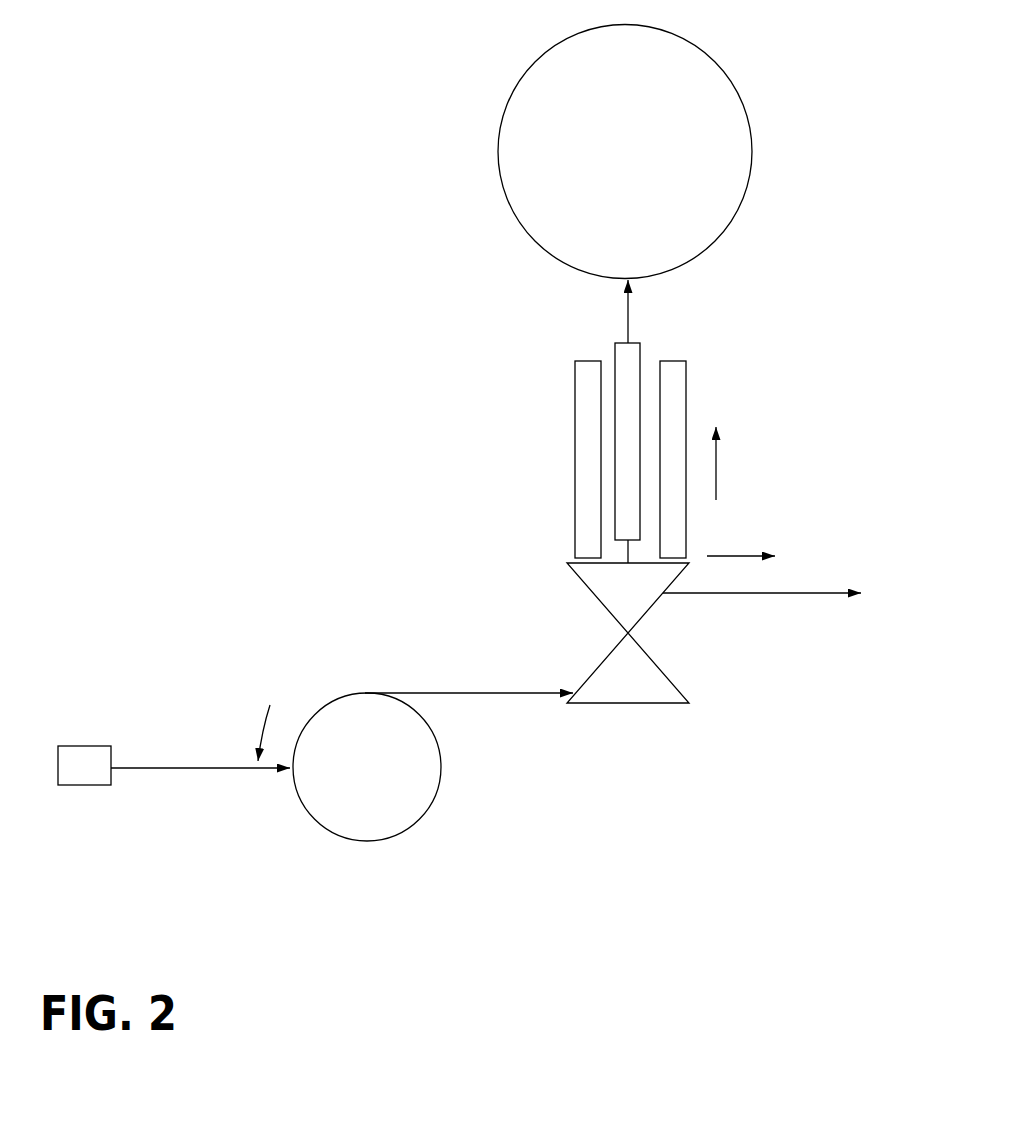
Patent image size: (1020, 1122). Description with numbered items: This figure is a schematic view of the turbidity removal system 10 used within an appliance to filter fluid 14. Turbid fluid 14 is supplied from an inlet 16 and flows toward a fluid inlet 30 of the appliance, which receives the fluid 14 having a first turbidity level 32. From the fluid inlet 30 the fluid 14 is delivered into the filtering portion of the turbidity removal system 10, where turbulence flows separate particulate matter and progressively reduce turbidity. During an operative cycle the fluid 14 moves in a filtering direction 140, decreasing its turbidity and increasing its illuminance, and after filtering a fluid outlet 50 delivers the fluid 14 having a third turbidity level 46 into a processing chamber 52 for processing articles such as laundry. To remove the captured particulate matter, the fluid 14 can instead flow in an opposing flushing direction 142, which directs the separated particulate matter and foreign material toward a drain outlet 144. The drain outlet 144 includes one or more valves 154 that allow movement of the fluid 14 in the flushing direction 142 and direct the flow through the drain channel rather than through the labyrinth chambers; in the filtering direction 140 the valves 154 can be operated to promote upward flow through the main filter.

The turbidity removal system 10 is at (537, 507).
The fluid 14 is at (233, 771).
The inlet 16 is at (83, 746).
The fluid inlet 30 is at (292, 768).
The first turbidity level 32 is at (269, 720).
The third turbidity level 46 is at (622, 316).
The fluid outlet 50 is at (630, 341).
The processing chamber 52 is at (753, 190).
The filtering direction 140 is at (716, 472).
The flushing direction 142 is at (732, 556).
The drain outlet 144 is at (804, 603).
The valves 154 is at (679, 656).